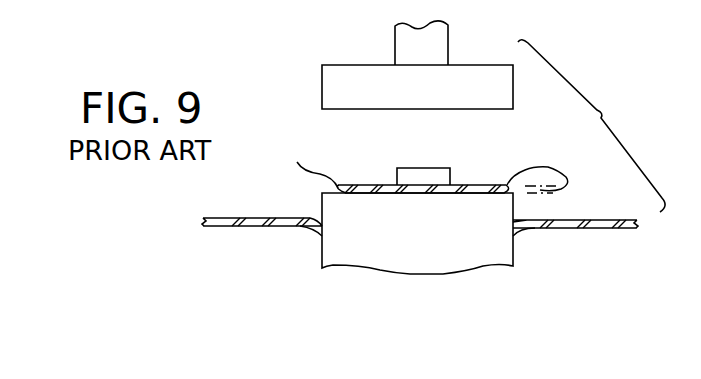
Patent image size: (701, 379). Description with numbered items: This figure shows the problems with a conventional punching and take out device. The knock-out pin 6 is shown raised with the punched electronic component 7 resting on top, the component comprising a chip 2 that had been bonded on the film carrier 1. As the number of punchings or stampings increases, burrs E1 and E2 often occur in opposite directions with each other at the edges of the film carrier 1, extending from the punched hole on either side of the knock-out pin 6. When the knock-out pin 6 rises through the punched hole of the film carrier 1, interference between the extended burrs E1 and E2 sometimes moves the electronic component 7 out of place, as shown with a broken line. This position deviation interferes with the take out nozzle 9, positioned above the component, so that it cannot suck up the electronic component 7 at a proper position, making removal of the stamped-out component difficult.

The take out nozzle 9 is at (502, 90).
The knock-out pin 6 is at (480, 256).
The punched electronic component 7 is at (371, 185).
The chip 2 is at (438, 173).
The film carrier 1 is at (242, 231).
The burr E1 is at (320, 233).
The burr E2 is at (548, 156).